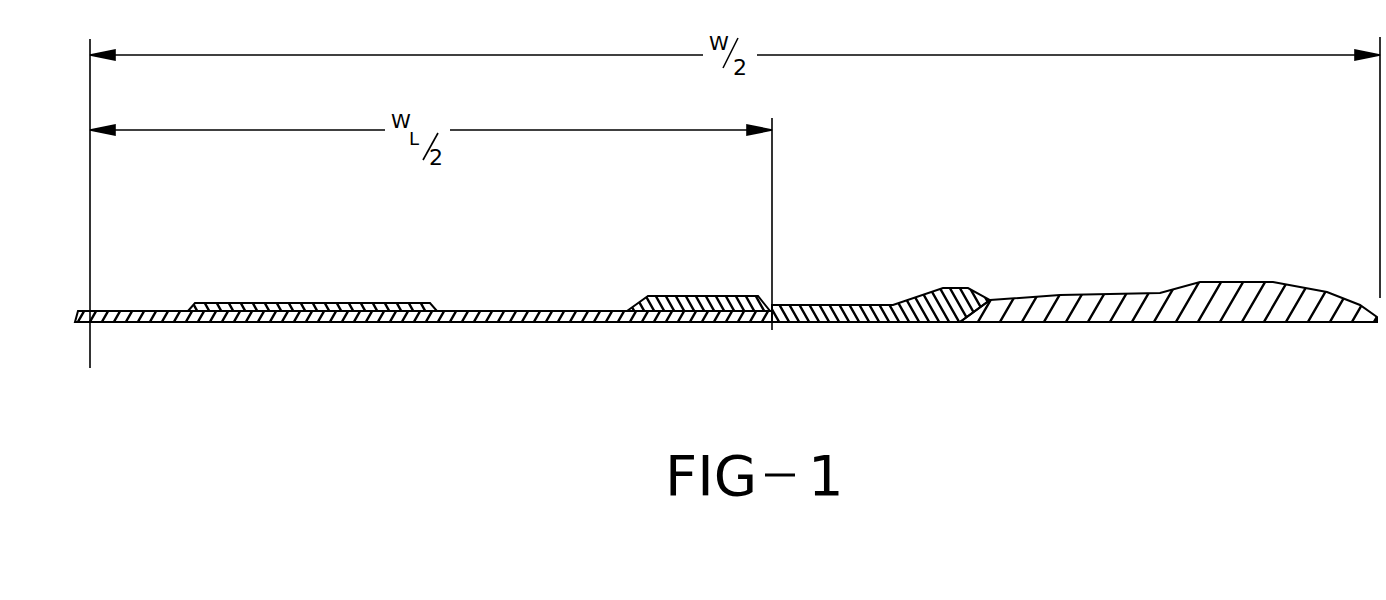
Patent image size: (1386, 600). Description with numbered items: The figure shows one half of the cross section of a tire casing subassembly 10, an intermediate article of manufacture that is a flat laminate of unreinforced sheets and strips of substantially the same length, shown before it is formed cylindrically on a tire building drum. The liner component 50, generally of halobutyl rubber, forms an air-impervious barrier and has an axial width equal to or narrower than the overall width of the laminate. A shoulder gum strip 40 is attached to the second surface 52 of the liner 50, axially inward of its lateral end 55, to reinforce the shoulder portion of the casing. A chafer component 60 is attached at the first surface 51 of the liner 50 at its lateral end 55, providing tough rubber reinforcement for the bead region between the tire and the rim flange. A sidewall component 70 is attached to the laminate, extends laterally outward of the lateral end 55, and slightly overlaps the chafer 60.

The tire casing subassembly 10 is at (1014, 234).
The shoulder gum strip 40 is at (333, 314).
The liner component 50 is at (562, 311).
The first surface of the liner 51 is at (480, 311).
The second surface of the liner 52 is at (515, 322).
The lateral end of the liner 55 is at (772, 322).
The chafer component 60 is at (660, 300).
The sidewall component 70 is at (1245, 288).